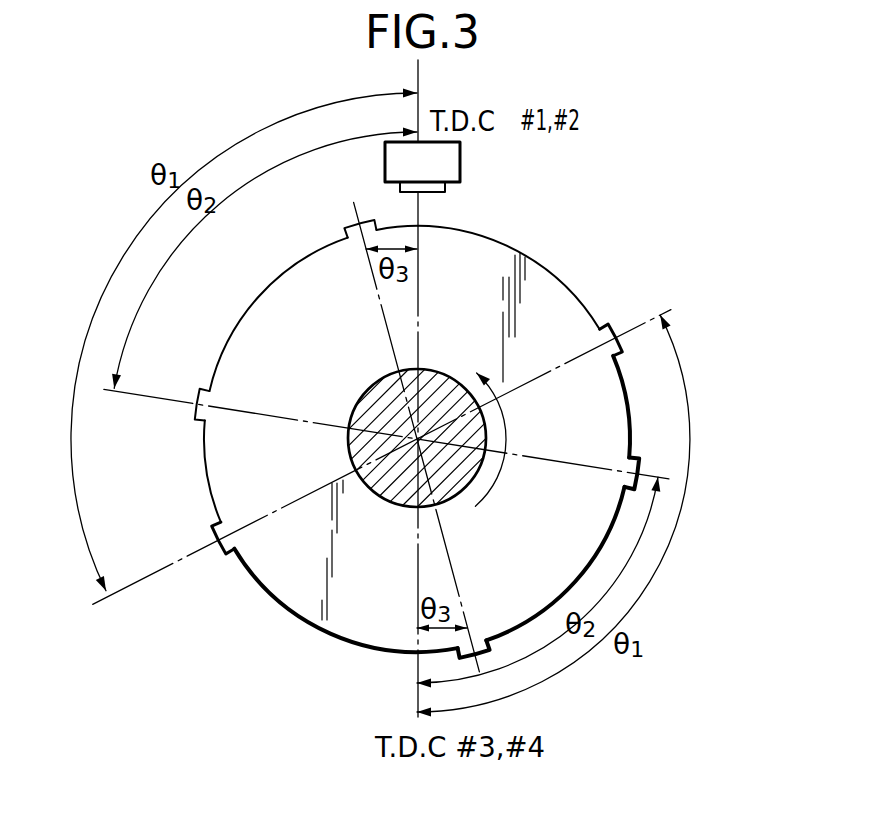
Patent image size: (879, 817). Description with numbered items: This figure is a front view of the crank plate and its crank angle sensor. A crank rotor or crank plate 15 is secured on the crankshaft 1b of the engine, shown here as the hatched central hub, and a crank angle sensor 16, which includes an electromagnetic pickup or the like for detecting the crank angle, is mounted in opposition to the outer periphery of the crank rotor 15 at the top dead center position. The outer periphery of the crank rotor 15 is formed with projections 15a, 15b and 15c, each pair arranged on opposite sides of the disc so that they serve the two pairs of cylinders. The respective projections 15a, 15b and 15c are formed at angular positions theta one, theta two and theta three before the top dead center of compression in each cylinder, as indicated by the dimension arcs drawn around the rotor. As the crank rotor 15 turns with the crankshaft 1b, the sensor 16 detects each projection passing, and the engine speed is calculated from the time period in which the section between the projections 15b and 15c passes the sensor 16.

The crank rotor 15 is at (549, 270).
The projection 15a is at (611, 330).
The projection 15b is at (630, 468).
The projection 15c is at (479, 652).
The crankshaft 1b is at (361, 396).
The crank angle sensor 16 is at (460, 162).